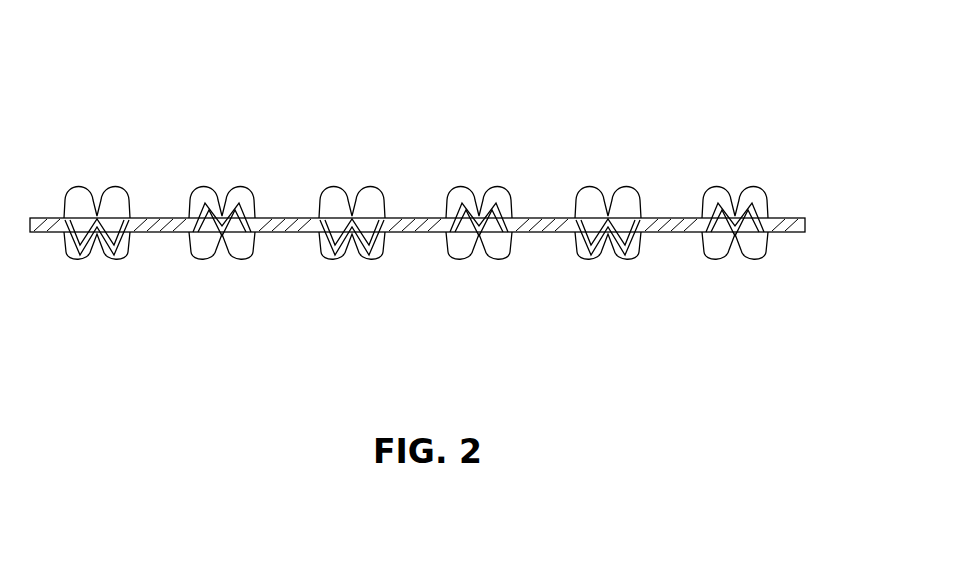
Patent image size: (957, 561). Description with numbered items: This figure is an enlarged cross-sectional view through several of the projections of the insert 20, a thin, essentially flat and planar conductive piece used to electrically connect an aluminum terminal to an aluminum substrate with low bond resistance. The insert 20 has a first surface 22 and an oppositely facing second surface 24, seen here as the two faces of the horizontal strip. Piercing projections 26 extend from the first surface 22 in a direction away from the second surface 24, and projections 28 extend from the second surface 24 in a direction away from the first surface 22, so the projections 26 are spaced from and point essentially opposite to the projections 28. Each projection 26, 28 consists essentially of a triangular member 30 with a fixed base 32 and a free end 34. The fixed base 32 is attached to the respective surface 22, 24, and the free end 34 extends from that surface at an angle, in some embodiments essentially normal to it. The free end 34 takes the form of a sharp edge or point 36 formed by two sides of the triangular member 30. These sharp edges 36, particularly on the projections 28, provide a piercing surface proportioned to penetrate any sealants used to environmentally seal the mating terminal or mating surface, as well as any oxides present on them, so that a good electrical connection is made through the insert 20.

The insert 20 is at (779, 105).
The first surface 22 is at (790, 218).
The second surface 24 is at (158, 233).
The projections 26 is at (258, 214).
The projections 28 is at (368, 247).
The triangular member 30 is at (67, 237).
The fixed base 32 is at (110, 225).
The free end 34 is at (103, 250).
The sharp edge 36 is at (628, 190).